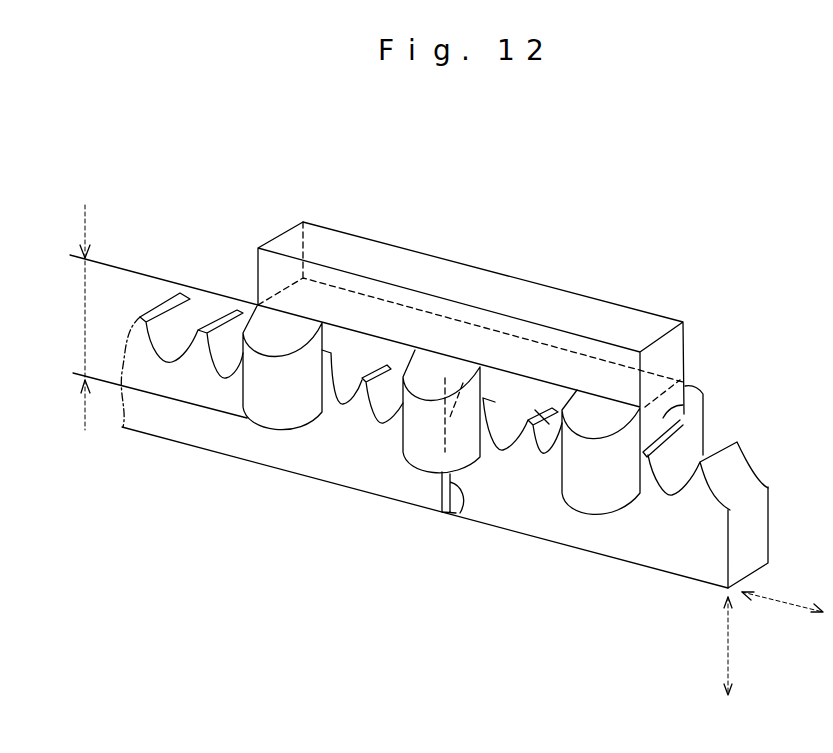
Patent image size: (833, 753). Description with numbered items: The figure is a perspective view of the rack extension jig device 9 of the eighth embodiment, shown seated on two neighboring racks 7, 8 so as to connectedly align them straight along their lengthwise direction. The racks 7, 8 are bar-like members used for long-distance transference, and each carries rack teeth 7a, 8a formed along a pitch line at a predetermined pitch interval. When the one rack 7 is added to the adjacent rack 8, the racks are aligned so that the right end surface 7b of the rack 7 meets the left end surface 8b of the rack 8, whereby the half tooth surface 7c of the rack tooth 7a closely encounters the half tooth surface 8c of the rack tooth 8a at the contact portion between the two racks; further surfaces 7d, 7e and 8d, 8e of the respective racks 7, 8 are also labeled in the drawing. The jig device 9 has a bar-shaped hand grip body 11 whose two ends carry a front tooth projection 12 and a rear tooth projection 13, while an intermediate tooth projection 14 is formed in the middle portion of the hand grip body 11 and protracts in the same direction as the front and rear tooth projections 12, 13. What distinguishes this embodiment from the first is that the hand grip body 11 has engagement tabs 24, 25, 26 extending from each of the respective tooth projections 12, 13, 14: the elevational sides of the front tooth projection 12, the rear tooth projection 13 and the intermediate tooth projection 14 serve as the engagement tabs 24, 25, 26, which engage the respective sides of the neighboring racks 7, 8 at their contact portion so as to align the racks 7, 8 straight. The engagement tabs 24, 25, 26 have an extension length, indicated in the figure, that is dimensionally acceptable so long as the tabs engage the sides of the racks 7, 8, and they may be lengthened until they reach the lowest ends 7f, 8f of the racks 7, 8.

The rack 7 is at (173, 429).
The rack tooth 7a is at (387, 367).
The right end surface 7b is at (457, 513).
The half tooth surface 7c is at (440, 382).
The tooth portion of first tooth member 7d is at (415, 447).
The tooth portion of first tooth member 7e is at (208, 338).
The lowest end 7f is at (227, 455).
The rack 8 is at (610, 541).
The rack tooth 8a is at (666, 468).
The left end surface 8b is at (447, 505).
The half tooth surface 8c is at (446, 384).
The tooth portion of second tooth member 8d is at (560, 478).
The tooth portion of second tooth member 8e is at (552, 440).
The lowest end 8f is at (627, 563).
The rack extension jig device 9 is at (699, 296).
The hand grip body 11 is at (472, 290).
The front tooth projection 12 is at (350, 315).
The rear tooth projection 13 is at (685, 410).
The intermediate tooth projection 14 is at (512, 375).
The engagement tab 24 is at (382, 388).
The engagement tab 25 is at (704, 422).
The engagement tab 26 is at (562, 373).